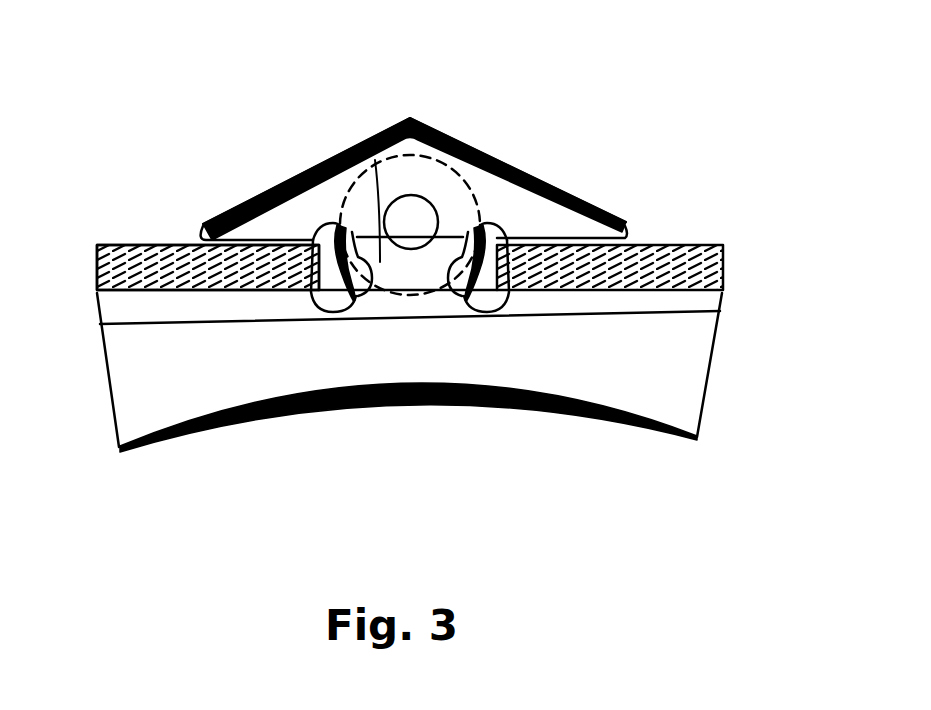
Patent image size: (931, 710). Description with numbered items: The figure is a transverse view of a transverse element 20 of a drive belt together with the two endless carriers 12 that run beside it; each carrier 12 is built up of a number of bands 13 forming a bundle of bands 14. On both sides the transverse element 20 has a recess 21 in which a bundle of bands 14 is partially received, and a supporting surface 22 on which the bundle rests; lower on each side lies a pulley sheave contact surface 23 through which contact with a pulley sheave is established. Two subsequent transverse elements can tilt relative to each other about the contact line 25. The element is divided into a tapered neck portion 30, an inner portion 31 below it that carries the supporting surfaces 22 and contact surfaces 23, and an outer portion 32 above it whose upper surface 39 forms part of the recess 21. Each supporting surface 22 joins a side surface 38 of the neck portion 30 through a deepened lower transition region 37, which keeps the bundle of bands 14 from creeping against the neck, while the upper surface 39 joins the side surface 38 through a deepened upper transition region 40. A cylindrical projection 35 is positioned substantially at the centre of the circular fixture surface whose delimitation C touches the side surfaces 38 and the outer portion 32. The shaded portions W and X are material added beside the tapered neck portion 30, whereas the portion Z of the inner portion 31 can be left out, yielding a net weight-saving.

The endless carrier 12 is at (115, 253).
The band 13 is at (727, 247).
The bundle of bands 14 is at (143, 257).
The transverse element 20 is at (314, 128).
The recess 21 is at (262, 240).
The supporting surface 22 is at (670, 240).
The pulley sheave contact surface 23 is at (712, 383).
The contact line 25 is at (168, 323).
The neck portion 30 is at (402, 124).
The inner portion 31 is at (228, 387).
The outer portion 32 is at (227, 228).
The projection 35 is at (417, 220).
The lower transition region 37 is at (503, 230).
The side surface 38 is at (372, 150).
The upper surface 39 is at (628, 236).
The upper transition region 40 is at (488, 222).
The added portion W is at (368, 262).
The delimitation of fixture surface C is at (405, 268).
The added portion X is at (448, 245).
The omitted portion Z is at (528, 407).